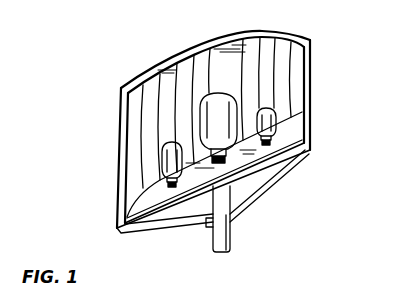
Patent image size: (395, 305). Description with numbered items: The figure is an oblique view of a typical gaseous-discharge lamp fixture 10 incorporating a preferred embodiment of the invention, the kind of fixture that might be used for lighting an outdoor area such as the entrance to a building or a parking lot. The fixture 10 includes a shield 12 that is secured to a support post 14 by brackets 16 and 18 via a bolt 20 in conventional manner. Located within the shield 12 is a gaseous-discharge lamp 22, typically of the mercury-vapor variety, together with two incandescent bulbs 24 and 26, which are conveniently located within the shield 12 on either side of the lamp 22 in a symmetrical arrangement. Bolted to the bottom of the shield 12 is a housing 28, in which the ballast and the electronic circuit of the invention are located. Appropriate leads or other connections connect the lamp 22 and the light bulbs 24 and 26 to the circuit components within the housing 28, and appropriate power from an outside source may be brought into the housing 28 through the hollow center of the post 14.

The gaseous-discharge lamp fixture 10 is at (334, 93).
The shield 12 is at (176, 58).
The support post 14 is at (232, 242).
The bracket 16 is at (118, 217).
The bracket 18 is at (268, 178).
The bolt 20 is at (210, 228).
The gaseous-discharge lamp 22 is at (221, 106).
The incandescent bulb 24 is at (163, 158).
The incandescent bulb 26 is at (272, 121).
The housing 28 is at (165, 207).